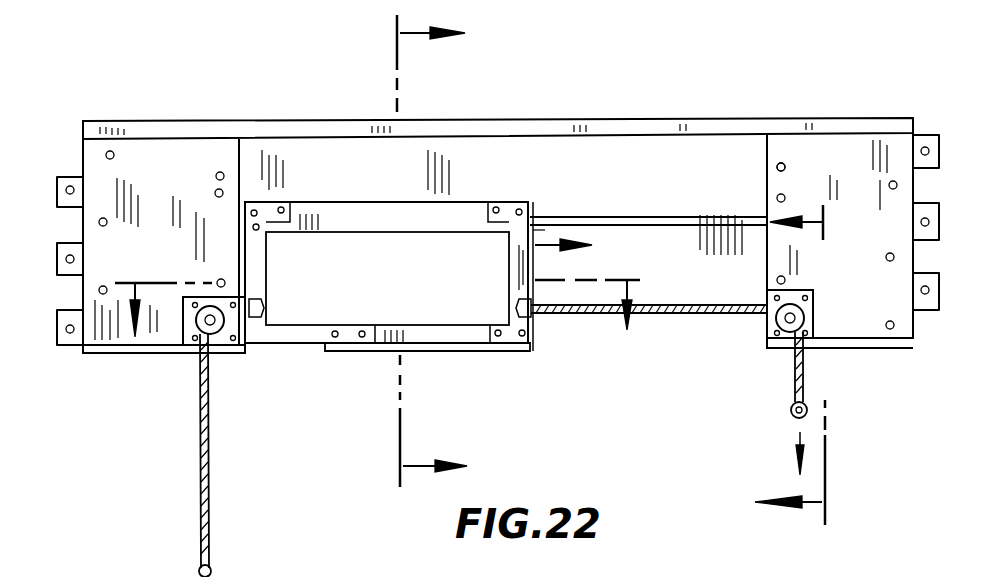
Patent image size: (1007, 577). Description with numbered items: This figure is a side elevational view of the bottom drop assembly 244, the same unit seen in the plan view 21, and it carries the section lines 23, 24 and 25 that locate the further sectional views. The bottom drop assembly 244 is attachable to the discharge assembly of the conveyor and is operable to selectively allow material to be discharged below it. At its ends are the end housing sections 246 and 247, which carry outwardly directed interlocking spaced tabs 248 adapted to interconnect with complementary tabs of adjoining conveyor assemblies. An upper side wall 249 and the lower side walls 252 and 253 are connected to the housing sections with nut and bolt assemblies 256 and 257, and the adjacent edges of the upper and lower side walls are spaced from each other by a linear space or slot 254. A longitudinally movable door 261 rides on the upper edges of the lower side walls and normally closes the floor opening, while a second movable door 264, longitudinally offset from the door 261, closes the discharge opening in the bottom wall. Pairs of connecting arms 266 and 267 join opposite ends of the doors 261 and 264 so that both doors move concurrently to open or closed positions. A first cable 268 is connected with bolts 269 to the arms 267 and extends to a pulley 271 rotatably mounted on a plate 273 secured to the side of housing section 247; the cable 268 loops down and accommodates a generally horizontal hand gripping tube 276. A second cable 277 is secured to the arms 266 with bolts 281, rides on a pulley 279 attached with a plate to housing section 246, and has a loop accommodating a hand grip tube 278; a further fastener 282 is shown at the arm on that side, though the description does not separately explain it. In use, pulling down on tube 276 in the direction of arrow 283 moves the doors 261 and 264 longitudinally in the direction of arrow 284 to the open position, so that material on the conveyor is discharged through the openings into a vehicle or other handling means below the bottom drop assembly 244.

The view reference 21 is at (351, 566).
The section line 23 is at (398, 255).
The section line 24 is at (377, 285).
The section line 25 is at (823, 367).
The bottom drop assembly 244 is at (540, 80).
The end housing section 246 is at (177, 148).
The end housing section 247 is at (854, 146).
The interlocking spaced tabs 248 is at (72, 180).
The upper side wall 249 is at (607, 160).
The lower side wall 252 is at (578, 318).
The lower side wall 253 is at (875, 567).
The linear space or slot 254 is at (720, 218).
The nut and bolt assembly 256 is at (216, 175).
The nut and bolt assembly 257 is at (786, 167).
The longitudinally movable door 261 is at (386, 218).
The movable door 264 is at (449, 333).
The connecting arm 266 is at (262, 265).
The connecting arm 267 is at (521, 255).
The first cable 268 is at (680, 320).
The bolt 269 is at (520, 340).
The pulley 271 is at (783, 345).
The plate 273 is at (812, 320).
The hand gripping tube 276 is at (789, 415).
The second cable 277 is at (200, 468).
The hand grip tube 278 is at (202, 568).
The pulley 279 is at (222, 348).
The bolt 281 is at (185, 325).
The bolt 282 is at (258, 310).
The arrow 283 is at (795, 448).
The arrow 284 is at (541, 243).